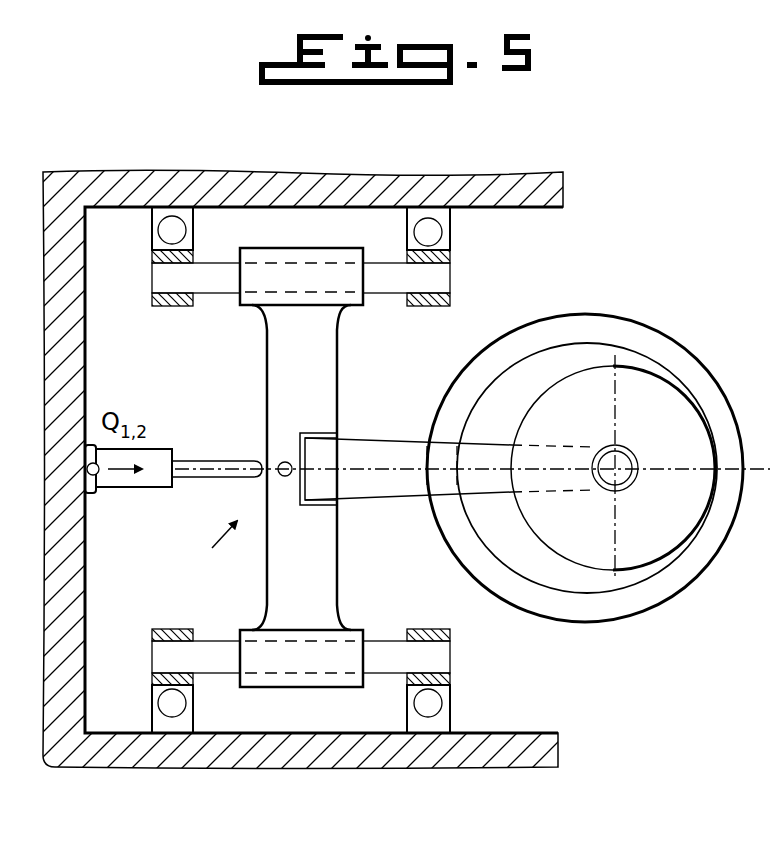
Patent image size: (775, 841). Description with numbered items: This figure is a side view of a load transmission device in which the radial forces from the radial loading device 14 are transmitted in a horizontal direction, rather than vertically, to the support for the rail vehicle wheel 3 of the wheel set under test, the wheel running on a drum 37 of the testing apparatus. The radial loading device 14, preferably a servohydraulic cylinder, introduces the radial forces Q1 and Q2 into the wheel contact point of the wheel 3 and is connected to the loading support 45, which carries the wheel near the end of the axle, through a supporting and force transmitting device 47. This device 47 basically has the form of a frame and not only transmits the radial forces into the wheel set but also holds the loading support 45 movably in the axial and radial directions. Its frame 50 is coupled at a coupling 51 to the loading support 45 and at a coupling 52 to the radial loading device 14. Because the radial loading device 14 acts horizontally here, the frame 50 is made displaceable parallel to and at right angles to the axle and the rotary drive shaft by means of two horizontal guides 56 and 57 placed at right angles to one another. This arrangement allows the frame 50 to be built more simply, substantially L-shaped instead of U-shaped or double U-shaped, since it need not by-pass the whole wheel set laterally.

The rail vehicle wheel 3 is at (663, 540).
The radial loading device 14 is at (118, 488).
The drum 37 is at (627, 604).
The loading support 45 is at (389, 445).
The supporting and force transmitting device 47 is at (208, 542).
The frame 50 is at (338, 548).
The coupling to loading support 51 is at (318, 433).
The coupling to radial loading device 52 is at (276, 463).
The horizontal guide 56 is at (289, 262).
The horizontal guide 57 is at (172, 218).